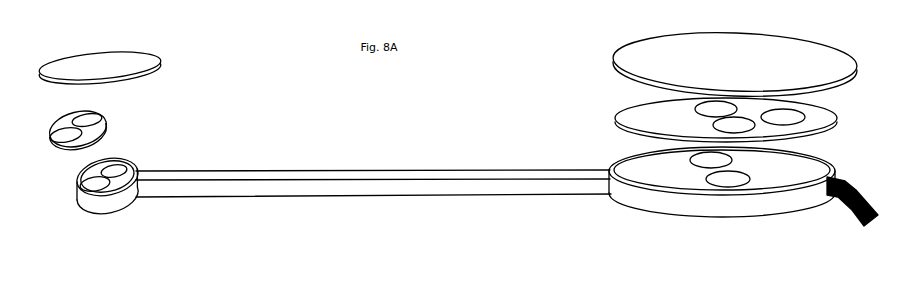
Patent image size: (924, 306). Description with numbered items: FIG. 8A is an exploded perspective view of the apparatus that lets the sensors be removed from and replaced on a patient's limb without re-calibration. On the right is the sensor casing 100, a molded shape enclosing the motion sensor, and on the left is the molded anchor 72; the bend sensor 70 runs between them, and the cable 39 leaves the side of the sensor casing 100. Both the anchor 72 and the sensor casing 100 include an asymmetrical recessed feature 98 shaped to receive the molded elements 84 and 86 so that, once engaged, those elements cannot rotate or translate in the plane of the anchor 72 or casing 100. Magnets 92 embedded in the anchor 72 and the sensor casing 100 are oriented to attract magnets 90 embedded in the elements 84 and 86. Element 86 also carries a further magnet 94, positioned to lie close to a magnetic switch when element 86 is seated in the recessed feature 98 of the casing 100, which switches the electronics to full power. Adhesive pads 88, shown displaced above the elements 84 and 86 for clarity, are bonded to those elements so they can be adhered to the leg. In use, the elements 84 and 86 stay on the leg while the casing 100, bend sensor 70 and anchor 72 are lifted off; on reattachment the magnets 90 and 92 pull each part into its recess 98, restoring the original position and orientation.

The cable 39 is at (846, 208).
The bend sensor 70 is at (159, 197).
The anchor 72 is at (108, 218).
The molded element 84 is at (107, 128).
The molded element 86 is at (613, 120).
The adhesive pad 88 is at (152, 72).
The magnet 90 is at (79, 120).
The magnet 92 is at (108, 172).
The magnet 94 is at (803, 117).
The asymmetrical recessed feature 98 is at (94, 182).
The sensor casing 100 is at (760, 211).